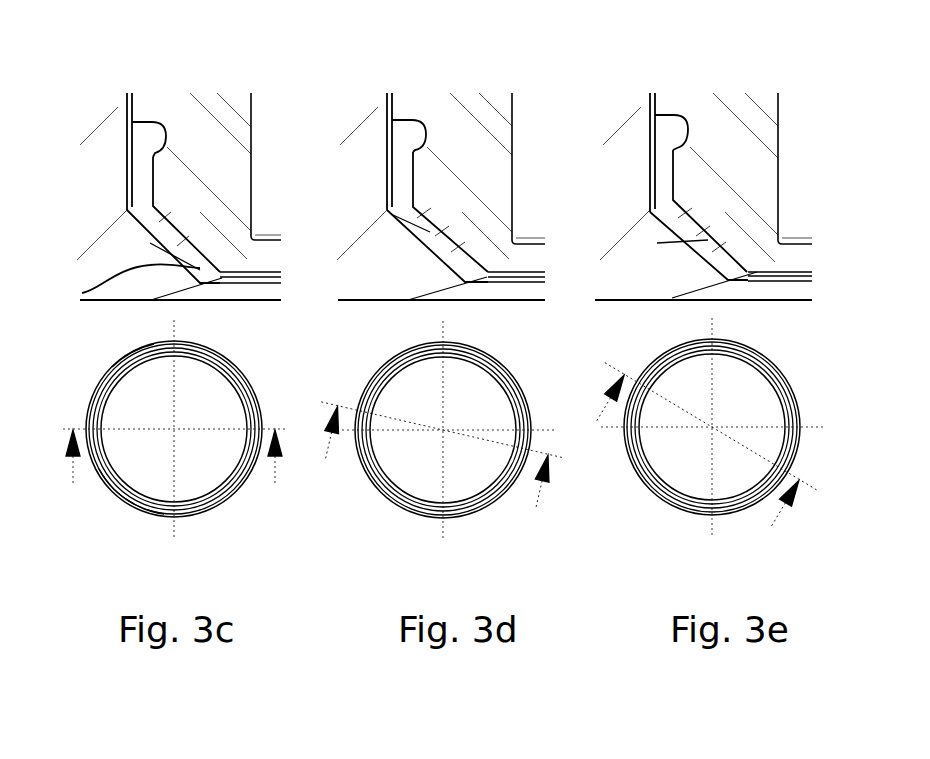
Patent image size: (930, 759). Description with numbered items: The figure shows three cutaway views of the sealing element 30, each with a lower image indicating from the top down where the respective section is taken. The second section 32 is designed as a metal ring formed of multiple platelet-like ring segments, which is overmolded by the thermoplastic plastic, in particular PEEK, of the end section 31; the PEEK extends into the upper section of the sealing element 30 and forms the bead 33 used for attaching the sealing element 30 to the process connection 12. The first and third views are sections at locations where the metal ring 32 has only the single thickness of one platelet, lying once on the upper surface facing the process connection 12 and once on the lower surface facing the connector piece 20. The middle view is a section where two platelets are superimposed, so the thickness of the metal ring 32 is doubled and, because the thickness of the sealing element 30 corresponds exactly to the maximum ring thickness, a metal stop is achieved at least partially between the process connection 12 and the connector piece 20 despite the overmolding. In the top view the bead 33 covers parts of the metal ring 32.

In FIG. 3c, the process connection 12 is at (224, 149).
In FIG. 3d, the process connection 12 is at (486, 176).
In FIG. 3e, the process connection 12 is at (751, 177).
In FIG. 3c, the connector piece 20 is at (85, 174).
In FIG. 3d, the connector piece 20 is at (362, 183).
In FIG. 3e, the connector piece 20 is at (625, 183).
In FIG. 3c, the sealing element 30 is at (16, 178).
In FIG. 3d, the sealing element 30 is at (441, 345).
In FIG. 3e, the sealing element 30 is at (697, 341).
In FIG. 3c, the end section 31 is at (116, 393).
In FIG. 3c, the second section 32 is at (23, 245).
In FIG. 3d, the second section 32 is at (396, 249).
In FIG. 3e, the second section 32 is at (658, 248).
In FIG. 3c, the bead 33 is at (16, 128).
In FIG. 3d, the bead 33 is at (409, 136).
In FIG. 3e, the bead 33 is at (671, 132).